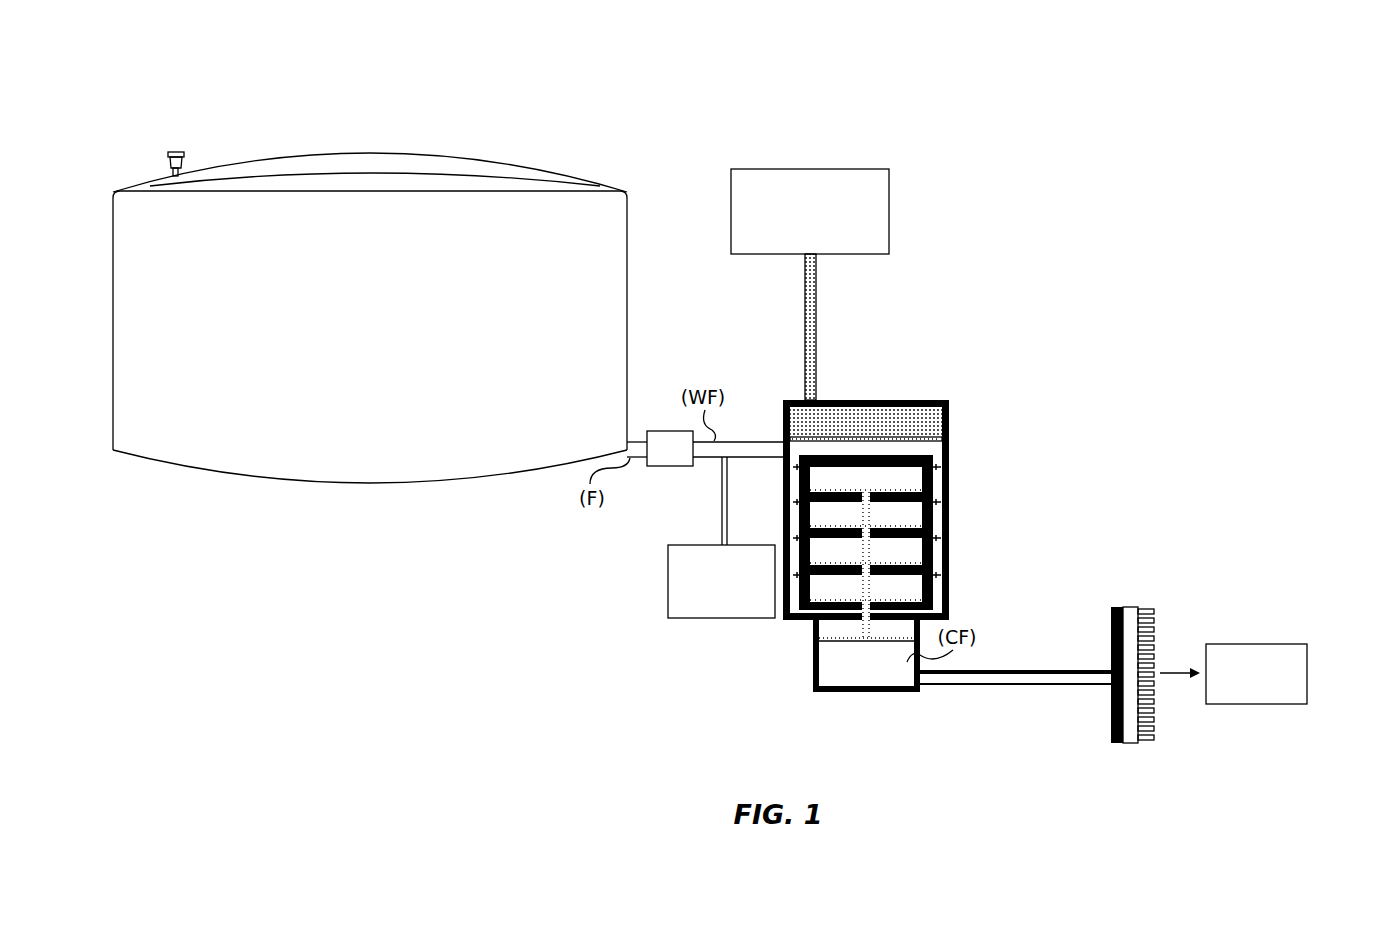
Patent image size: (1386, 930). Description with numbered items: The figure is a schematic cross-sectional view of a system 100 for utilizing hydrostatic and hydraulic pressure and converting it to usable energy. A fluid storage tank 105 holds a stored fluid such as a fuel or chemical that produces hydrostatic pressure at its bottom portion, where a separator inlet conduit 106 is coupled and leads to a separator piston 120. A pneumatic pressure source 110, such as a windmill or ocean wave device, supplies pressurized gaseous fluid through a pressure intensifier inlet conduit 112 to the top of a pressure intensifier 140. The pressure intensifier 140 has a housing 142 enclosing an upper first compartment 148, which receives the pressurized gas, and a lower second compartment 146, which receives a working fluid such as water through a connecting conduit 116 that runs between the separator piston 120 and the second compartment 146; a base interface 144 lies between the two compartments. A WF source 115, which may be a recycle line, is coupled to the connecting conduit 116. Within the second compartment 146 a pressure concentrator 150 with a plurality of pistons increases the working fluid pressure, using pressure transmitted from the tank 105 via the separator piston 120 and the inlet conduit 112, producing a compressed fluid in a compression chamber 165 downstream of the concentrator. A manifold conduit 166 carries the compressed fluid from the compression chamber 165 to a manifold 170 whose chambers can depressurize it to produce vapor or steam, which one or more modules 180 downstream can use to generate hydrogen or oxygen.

The system 100 is at (1225, 197).
The fluid storage tank 105 is at (370, 317).
The separator inlet conduit 106 is at (634, 440).
The pneumatic pressure source 110 is at (810, 211).
The pressure intensifier inlet conduit 112 is at (816, 294).
The WF source 115 is at (721, 537).
The connecting conduit 116 is at (766, 441).
The separator piston 120 is at (657, 482).
The pressure intensifier 140 is at (962, 404).
The housing 142 is at (897, 399).
The base interface 144 is at (937, 435).
The second compartment 146 is at (933, 448).
The first compartment 148 is at (845, 422).
The pressure concentrator 150 is at (944, 477).
The compression chamber 165 is at (820, 675).
The manifold conduit 166 is at (992, 678).
The manifold 170 is at (1193, 575).
The modules 180 is at (1332, 612).